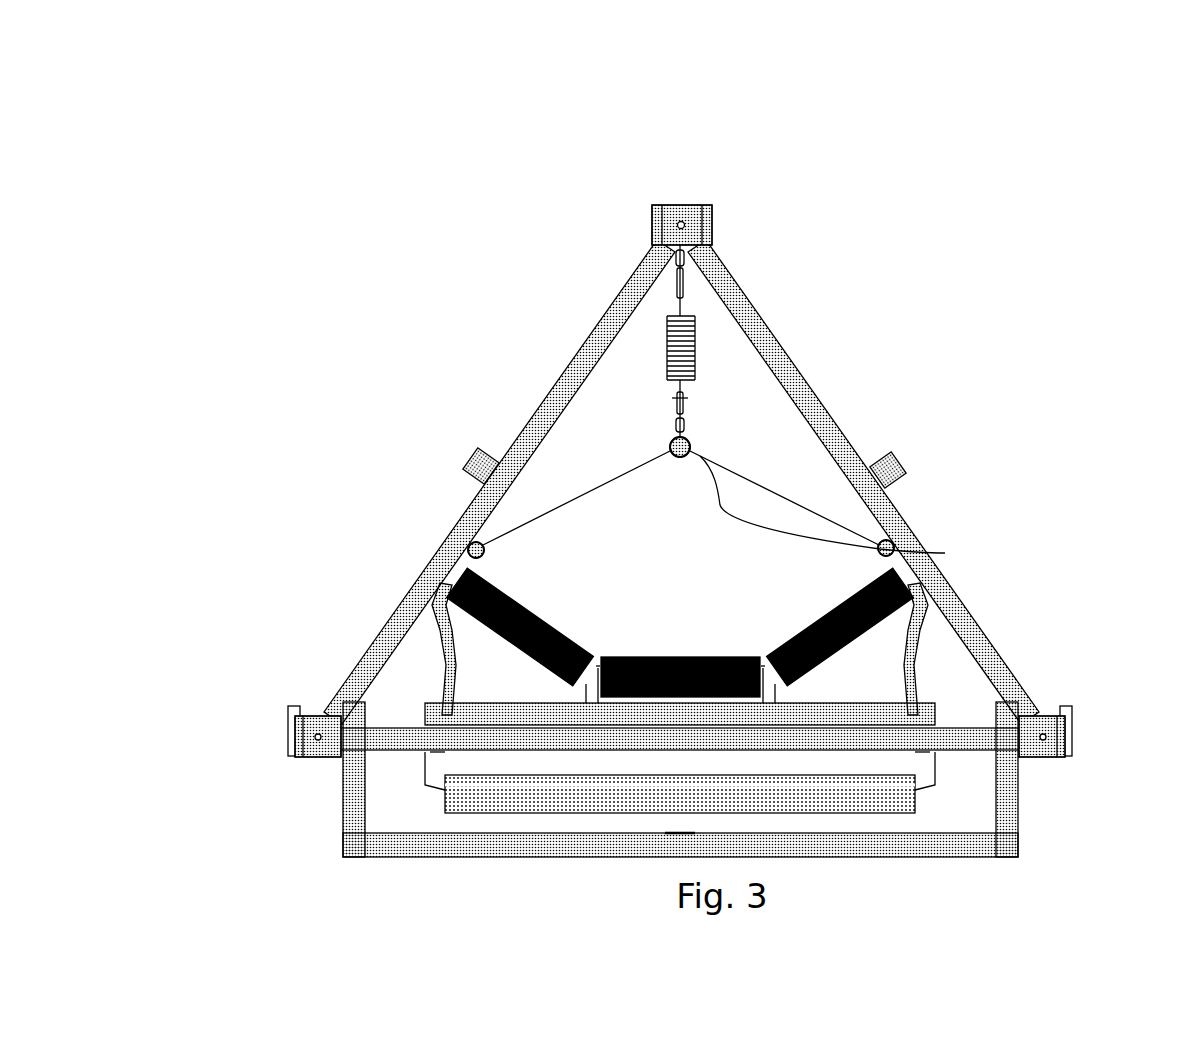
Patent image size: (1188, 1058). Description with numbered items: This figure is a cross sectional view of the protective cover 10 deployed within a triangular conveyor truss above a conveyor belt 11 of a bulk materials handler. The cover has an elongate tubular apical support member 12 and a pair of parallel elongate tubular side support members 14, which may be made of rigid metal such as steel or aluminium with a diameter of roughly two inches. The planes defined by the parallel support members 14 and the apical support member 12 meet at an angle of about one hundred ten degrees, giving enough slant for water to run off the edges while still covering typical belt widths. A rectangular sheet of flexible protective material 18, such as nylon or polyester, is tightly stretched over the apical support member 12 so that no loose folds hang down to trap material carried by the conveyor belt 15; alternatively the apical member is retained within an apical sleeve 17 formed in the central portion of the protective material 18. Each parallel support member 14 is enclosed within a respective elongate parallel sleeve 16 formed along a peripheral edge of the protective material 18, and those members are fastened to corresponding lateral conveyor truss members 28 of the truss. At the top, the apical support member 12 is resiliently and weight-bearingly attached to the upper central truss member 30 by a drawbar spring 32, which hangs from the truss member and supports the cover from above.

The protective cover 10 is at (785, 461).
The conveyor belt 11 is at (760, 272).
The apical support member 12 is at (672, 442).
The parallel side support members 14 is at (467, 550).
The conveyor belt 15 is at (840, 622).
The parallel sleeve 16 is at (478, 558).
The apical sleeve 17 is at (895, 548).
The protective material 18 is at (697, 447).
The lateral conveyor truss member 28 is at (545, 412).
The upper central truss member 30 is at (692, 207).
The drawbar spring 32 is at (665, 322).